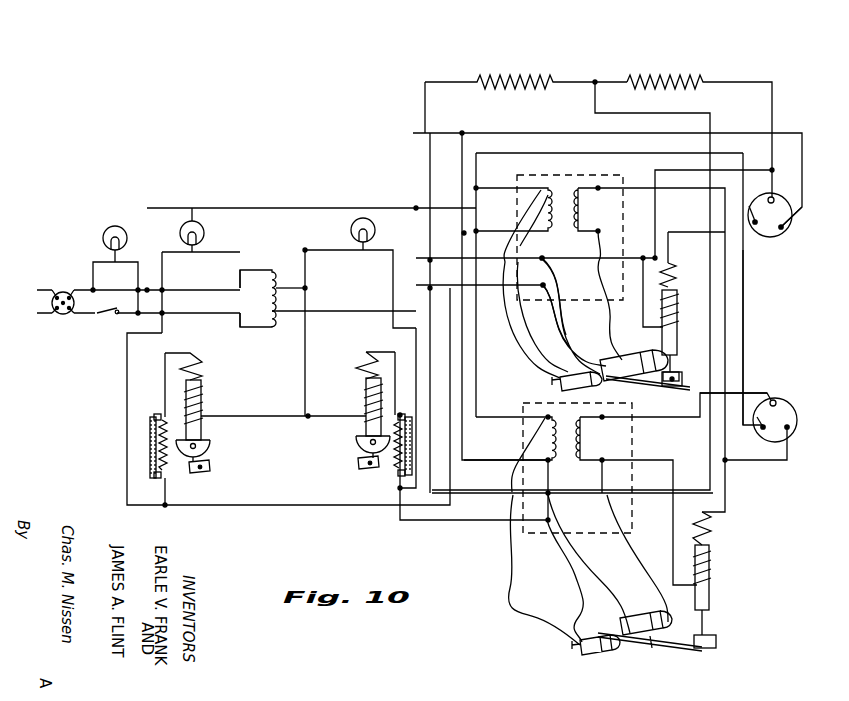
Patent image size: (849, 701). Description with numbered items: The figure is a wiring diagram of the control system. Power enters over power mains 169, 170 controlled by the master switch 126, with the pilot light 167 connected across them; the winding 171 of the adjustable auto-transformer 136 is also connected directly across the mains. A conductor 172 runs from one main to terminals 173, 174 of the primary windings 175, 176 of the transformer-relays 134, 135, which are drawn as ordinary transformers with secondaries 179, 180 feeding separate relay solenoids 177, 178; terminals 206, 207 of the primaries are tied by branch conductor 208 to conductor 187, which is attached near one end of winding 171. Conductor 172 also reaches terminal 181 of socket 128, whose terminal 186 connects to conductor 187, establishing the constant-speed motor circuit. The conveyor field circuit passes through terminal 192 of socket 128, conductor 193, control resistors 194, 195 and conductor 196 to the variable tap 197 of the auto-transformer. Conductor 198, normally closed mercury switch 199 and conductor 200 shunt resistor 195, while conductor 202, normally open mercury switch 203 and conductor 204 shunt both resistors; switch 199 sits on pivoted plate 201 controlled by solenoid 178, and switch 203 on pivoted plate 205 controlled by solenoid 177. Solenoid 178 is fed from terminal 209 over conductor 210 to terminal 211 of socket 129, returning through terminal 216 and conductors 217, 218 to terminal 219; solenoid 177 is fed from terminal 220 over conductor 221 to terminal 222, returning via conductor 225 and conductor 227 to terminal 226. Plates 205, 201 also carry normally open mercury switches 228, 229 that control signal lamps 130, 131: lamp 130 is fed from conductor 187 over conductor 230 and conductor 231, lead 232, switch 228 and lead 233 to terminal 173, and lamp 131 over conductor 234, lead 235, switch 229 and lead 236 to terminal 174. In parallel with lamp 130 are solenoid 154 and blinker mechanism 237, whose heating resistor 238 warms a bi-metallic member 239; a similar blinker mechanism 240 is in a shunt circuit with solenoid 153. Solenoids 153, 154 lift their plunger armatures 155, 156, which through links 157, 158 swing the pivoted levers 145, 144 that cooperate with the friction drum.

The master switch 126 is at (66, 292).
The socket 128 is at (773, 238).
The socket 129 is at (783, 402).
The signal lamp 130 is at (192, 207).
The signal lamp 131 is at (364, 217).
The transformer-relay 134 is at (563, 172).
The transformer-relay 135 is at (575, 472).
The auto-transformer 136 is at (270, 268).
The pivoted lever 144 is at (210, 470).
The pivoted lever 145 is at (360, 466).
The solenoid 153 is at (362, 368).
The solenoid 154 is at (200, 360).
The plunger armature 155 is at (366, 422).
The plunger armature 156 is at (200, 426).
The link 157 is at (360, 452).
The link 158 is at (210, 456).
The pilot light 167 is at (115, 226).
The power main 169 is at (40, 288).
The power main 170 is at (40, 317).
The auto-transformer winding 171 is at (240, 279).
The conductor 172 is at (322, 206).
The primary terminal 173 is at (546, 190).
The primary terminal 174 is at (548, 418).
The primary winding 175 is at (545, 214).
The primary winding 176 is at (556, 441).
The relay solenoid 177 is at (678, 290).
The relay solenoid 178 is at (712, 542).
The secondary winding 179 is at (580, 214).
The secondary winding 180 is at (588, 455).
The socket terminal 181 is at (754, 226).
The socket terminal 186 is at (784, 228).
The conductor 187 is at (790, 131).
The socket terminal 192 is at (773, 198).
The conductor 193 is at (773, 84).
The control resistor 194 is at (650, 80).
The control resistor 195 is at (516, 80).
The conductor 196 is at (424, 111).
The variable tap 197 is at (278, 286).
The conductor 198 is at (697, 113).
The mercury switch 199 is at (625, 619).
The conductor 200 is at (431, 300).
The pivoted plate 201 is at (663, 652).
The conductor 202 is at (656, 212).
The mercury switch 203 is at (626, 359).
The conductor 204 is at (543, 285).
The pivoted plate 205 is at (643, 390).
The primary terminal 206 is at (542, 258).
The primary terminal 207 is at (548, 463).
The branch conductor 208 is at (463, 174).
The secondary terminal 209 is at (604, 418).
The conductor 210 is at (753, 392).
The socket terminal 211 is at (774, 398).
The socket terminal 216 is at (789, 428).
The conductor 217 is at (728, 489).
The conductor 218 is at (674, 482).
The secondary terminal 219 is at (602, 458).
The secondary terminal 220 is at (600, 189).
The conductor 221 is at (744, 309).
The socket terminal 222 is at (762, 430).
The conductor 225 is at (670, 235).
The secondary terminal 226 is at (611, 248).
The conductor 227 is at (642, 306).
The mercury switch 228 is at (573, 372).
The mercury switch 229 is at (598, 654).
The conductor 230 is at (238, 250).
The conductor 231 is at (127, 400).
The lead 232 is at (554, 336).
The lead 233 is at (521, 346).
The conductor 234 is at (416, 350).
The lead 235 is at (572, 575).
The lead 236 is at (512, 606).
The blinker mechanism 237 is at (156, 412).
The heating resistor 238 is at (165, 462).
The bi-metallic member 239 is at (150, 436).
The blinker mechanism 240 is at (408, 412).